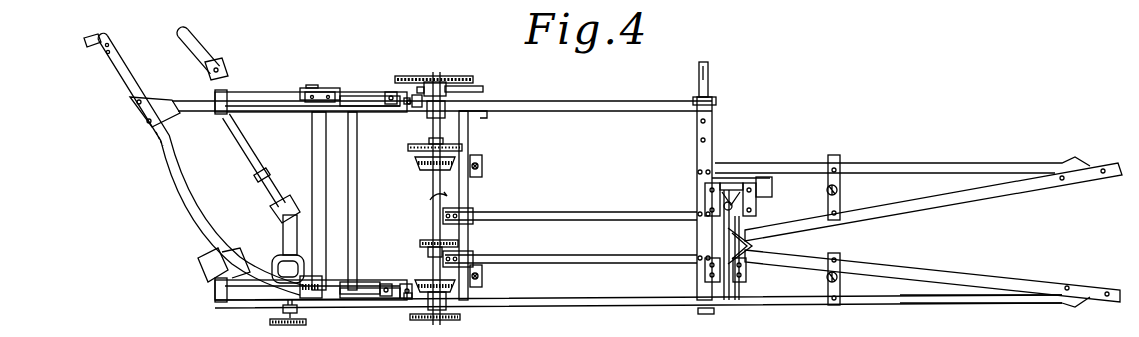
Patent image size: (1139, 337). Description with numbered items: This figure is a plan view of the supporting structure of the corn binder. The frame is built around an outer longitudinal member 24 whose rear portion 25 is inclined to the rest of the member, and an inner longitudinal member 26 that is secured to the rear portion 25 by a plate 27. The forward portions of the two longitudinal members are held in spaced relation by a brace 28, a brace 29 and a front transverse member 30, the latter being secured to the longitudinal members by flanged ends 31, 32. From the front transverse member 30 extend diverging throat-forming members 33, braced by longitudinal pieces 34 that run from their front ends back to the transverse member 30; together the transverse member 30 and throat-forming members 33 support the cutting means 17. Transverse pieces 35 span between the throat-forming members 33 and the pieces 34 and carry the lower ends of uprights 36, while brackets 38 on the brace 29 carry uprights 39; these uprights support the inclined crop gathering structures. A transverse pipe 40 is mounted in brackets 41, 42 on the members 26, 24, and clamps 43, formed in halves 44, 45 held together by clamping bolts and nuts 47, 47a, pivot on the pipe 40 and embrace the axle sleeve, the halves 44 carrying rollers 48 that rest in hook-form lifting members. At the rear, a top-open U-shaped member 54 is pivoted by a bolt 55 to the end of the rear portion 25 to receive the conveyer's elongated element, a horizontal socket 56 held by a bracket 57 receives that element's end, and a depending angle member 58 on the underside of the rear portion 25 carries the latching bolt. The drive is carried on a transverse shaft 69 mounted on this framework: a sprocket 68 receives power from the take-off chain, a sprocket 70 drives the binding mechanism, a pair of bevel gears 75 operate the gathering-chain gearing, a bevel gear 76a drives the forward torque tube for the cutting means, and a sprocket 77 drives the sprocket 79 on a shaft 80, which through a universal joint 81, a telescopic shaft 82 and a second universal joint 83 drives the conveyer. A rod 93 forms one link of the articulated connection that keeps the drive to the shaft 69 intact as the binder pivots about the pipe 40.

The cutting means 17 is at (747, 238).
The outer longitudinal member 24 is at (556, 308).
The rear portion 25 is at (177, 185).
The inner longitudinal member 26 is at (548, 103).
The plate 27 is at (152, 100).
The brace 28 is at (358, 198).
The brace 29 is at (470, 186).
The front transverse member 30 is at (712, 128).
The flanged end 31 is at (710, 90).
The flanged end 32 is at (704, 309).
The throat-forming members 33 is at (897, 260).
The longitudinal pieces 34 is at (895, 165).
The transverse pieces 35 is at (841, 182).
The uprights 36 is at (827, 190).
The brackets 38 is at (478, 156).
The uprights 39 is at (479, 165).
The transverse pipe 40 is at (327, 168).
The bracket 41 is at (333, 92).
The bracket 42 is at (335, 283).
The clamps 43 is at (302, 88).
The clamp half 44 is at (363, 92).
The clamp half 45 is at (267, 92).
The clamping bolts 47 is at (418, 108).
The nuts 47a is at (398, 336).
The rollers 48 is at (384, 92).
The U-shaped member 54 is at (83, 48).
The bolt 55 is at (110, 48).
The socket 56 is at (207, 267).
The bracket 57 is at (264, 254).
The depending angle member 58 is at (160, 133).
The sprocket 68 is at (460, 75).
The transverse shaft 69 is at (441, 125).
The sprocket 70 is at (425, 243).
The bevel gears 75 is at (420, 167).
The bevel gear 76a is at (413, 147).
The sprocket 77 is at (451, 319).
The sprocket 79 is at (286, 325).
The shaft 80 is at (285, 309).
The universal joint 81 is at (274, 218).
The telescopic shaft 82 is at (256, 152).
The universal joint 83 is at (218, 73).
The rod 93 is at (478, 90).